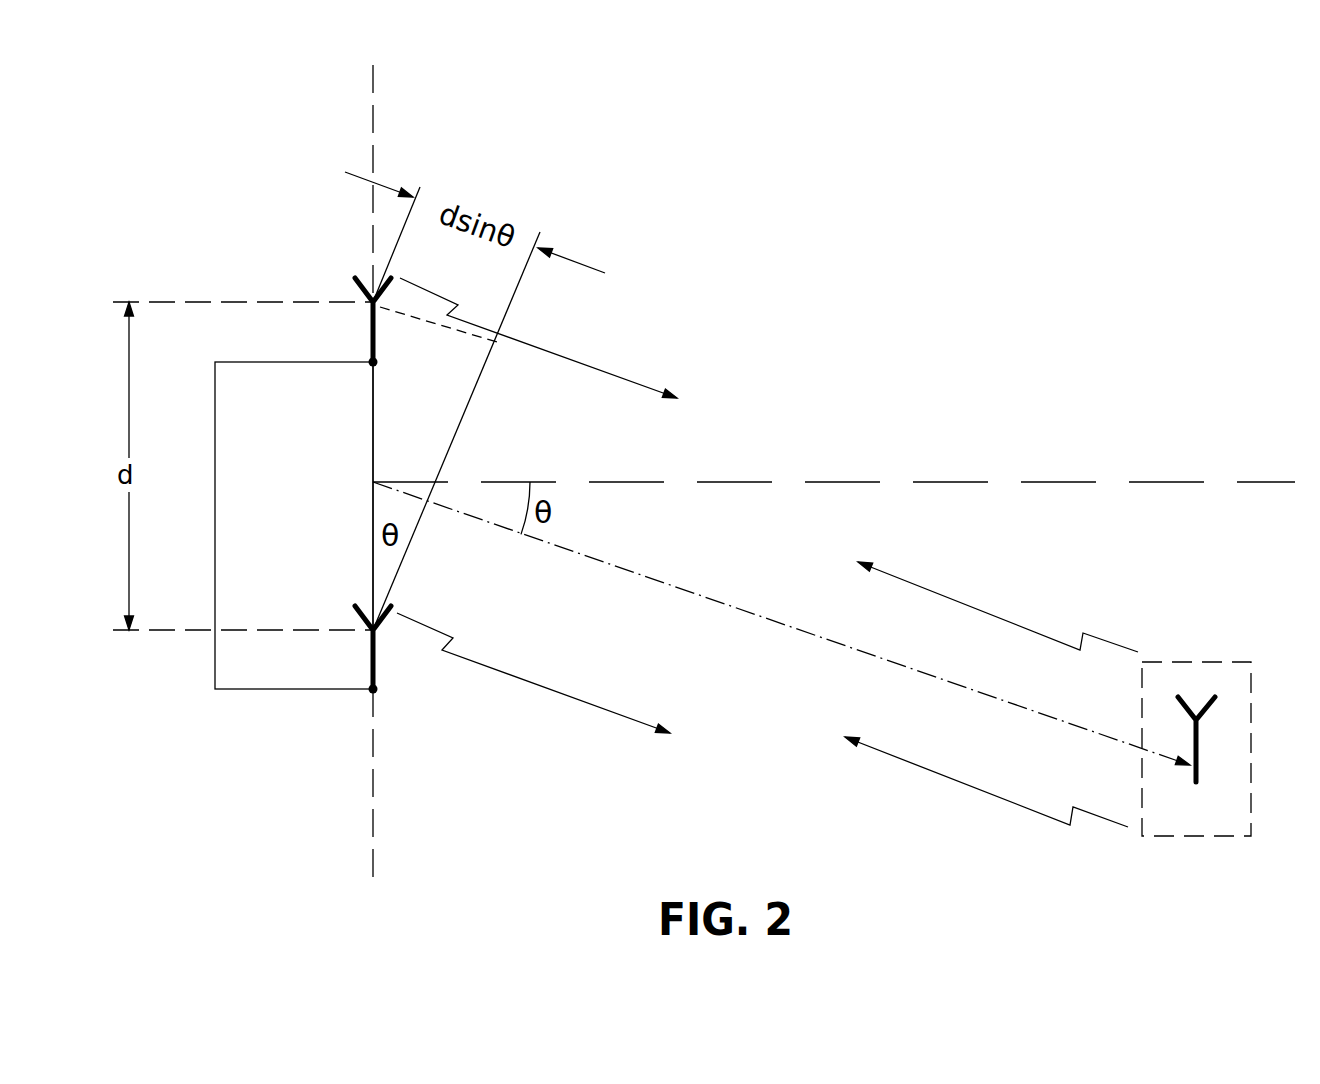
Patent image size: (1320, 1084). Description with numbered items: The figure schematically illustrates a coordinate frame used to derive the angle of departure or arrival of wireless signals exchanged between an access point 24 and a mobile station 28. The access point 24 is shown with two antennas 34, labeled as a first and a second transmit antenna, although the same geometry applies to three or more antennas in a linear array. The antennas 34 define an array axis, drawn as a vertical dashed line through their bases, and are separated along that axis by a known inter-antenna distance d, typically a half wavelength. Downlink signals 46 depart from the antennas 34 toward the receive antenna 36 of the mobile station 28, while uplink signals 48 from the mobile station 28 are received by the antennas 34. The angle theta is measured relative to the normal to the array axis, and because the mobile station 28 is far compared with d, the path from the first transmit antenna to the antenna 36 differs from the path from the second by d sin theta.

The access point 24 is at (215, 425).
The antennas 34 is at (353, 283).
The downlink signals 46 is at (608, 368).
The uplink signals 48 is at (992, 613).
The mobile station 28 is at (1223, 662).
The antenna 36 is at (1173, 712).